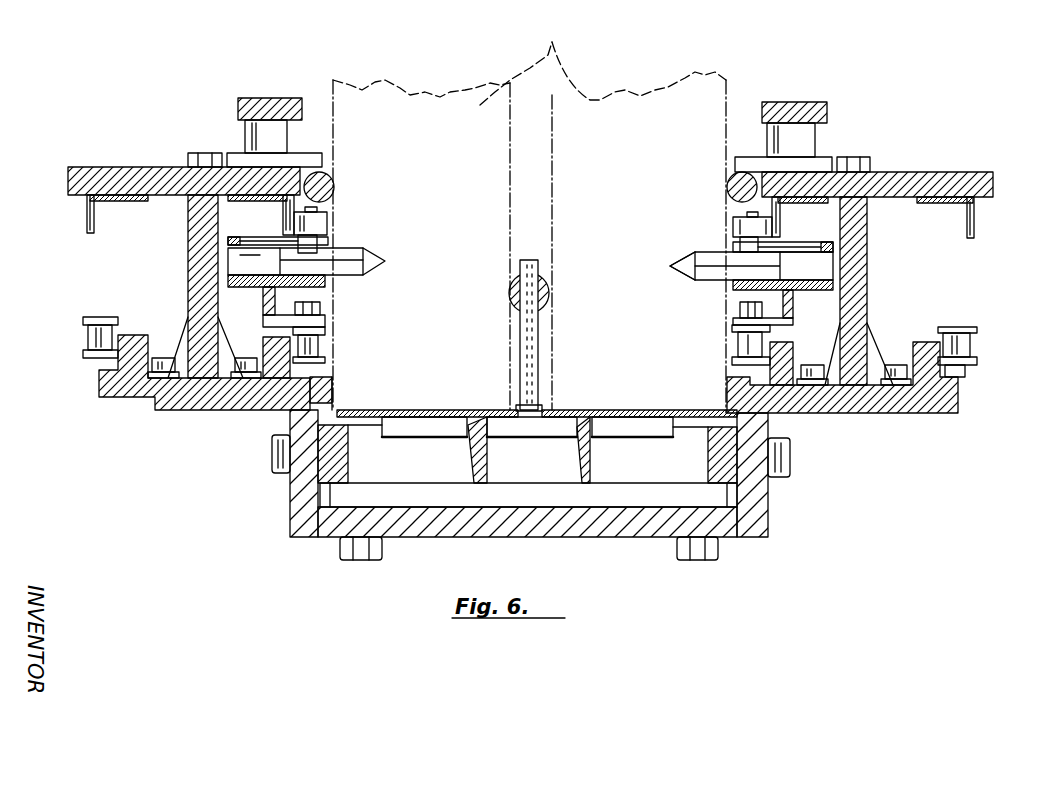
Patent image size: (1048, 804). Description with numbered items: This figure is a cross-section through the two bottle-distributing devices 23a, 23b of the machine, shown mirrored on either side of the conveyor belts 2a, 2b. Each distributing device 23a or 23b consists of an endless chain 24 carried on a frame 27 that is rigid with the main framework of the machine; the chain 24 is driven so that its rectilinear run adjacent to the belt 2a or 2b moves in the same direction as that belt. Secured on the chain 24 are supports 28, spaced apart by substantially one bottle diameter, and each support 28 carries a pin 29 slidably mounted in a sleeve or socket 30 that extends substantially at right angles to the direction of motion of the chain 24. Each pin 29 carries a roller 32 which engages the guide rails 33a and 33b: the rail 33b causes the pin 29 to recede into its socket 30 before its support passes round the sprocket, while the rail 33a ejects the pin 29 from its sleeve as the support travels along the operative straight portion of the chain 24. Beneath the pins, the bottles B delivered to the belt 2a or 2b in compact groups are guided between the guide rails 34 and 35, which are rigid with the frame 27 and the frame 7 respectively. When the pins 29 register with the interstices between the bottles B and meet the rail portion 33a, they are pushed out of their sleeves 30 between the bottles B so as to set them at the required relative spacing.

The belt 2a is at (432, 410).
The belt 2b is at (597, 410).
The frame 7 is at (305, 490).
The distributing device 23a is at (143, 160).
The distributing device 23b is at (893, 165).
The endless chain 24 is at (312, 332).
The frame 27 is at (203, 332).
The support 28 is at (322, 312).
The pin 29 is at (712, 270).
The sleeve or socket 30 is at (336, 240).
The roller 32 is at (316, 226).
The guide rail 33a is at (283, 210).
The guide rail 33b is at (88, 212).
The guide rail 34 is at (332, 180).
The guide rail 35 is at (536, 266).
The bottles B is at (529, 217).